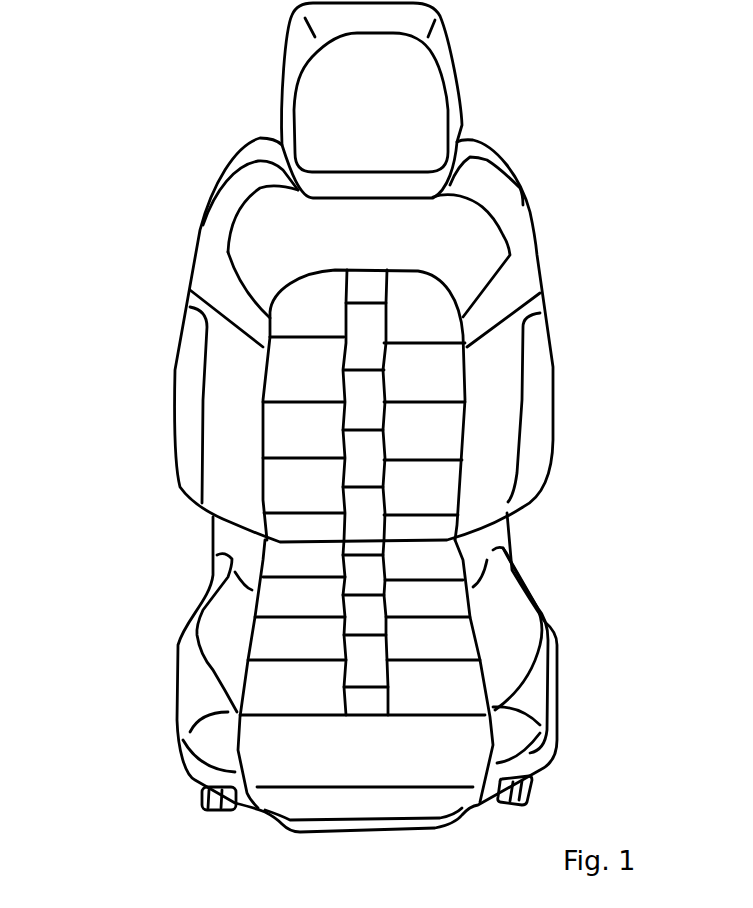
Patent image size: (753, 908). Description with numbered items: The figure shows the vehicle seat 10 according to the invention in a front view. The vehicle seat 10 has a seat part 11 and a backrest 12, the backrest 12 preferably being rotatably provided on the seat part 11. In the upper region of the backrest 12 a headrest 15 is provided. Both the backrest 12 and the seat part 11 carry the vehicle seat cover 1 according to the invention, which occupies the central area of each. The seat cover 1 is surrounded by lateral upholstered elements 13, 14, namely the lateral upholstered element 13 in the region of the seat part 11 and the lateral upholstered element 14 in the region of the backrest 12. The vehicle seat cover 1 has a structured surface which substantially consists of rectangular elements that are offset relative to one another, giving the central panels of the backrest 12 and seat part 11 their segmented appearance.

The vehicle seat 10 is at (556, 112).
The seat part 11 is at (578, 663).
The backrest 12 is at (580, 369).
The lateral upholstered element in seat region 13 is at (500, 622).
The lateral upholstered element in backrest region 14 is at (495, 427).
The headrest 15 is at (337, 78).
The vehicle seat cover 1 is at (268, 271).